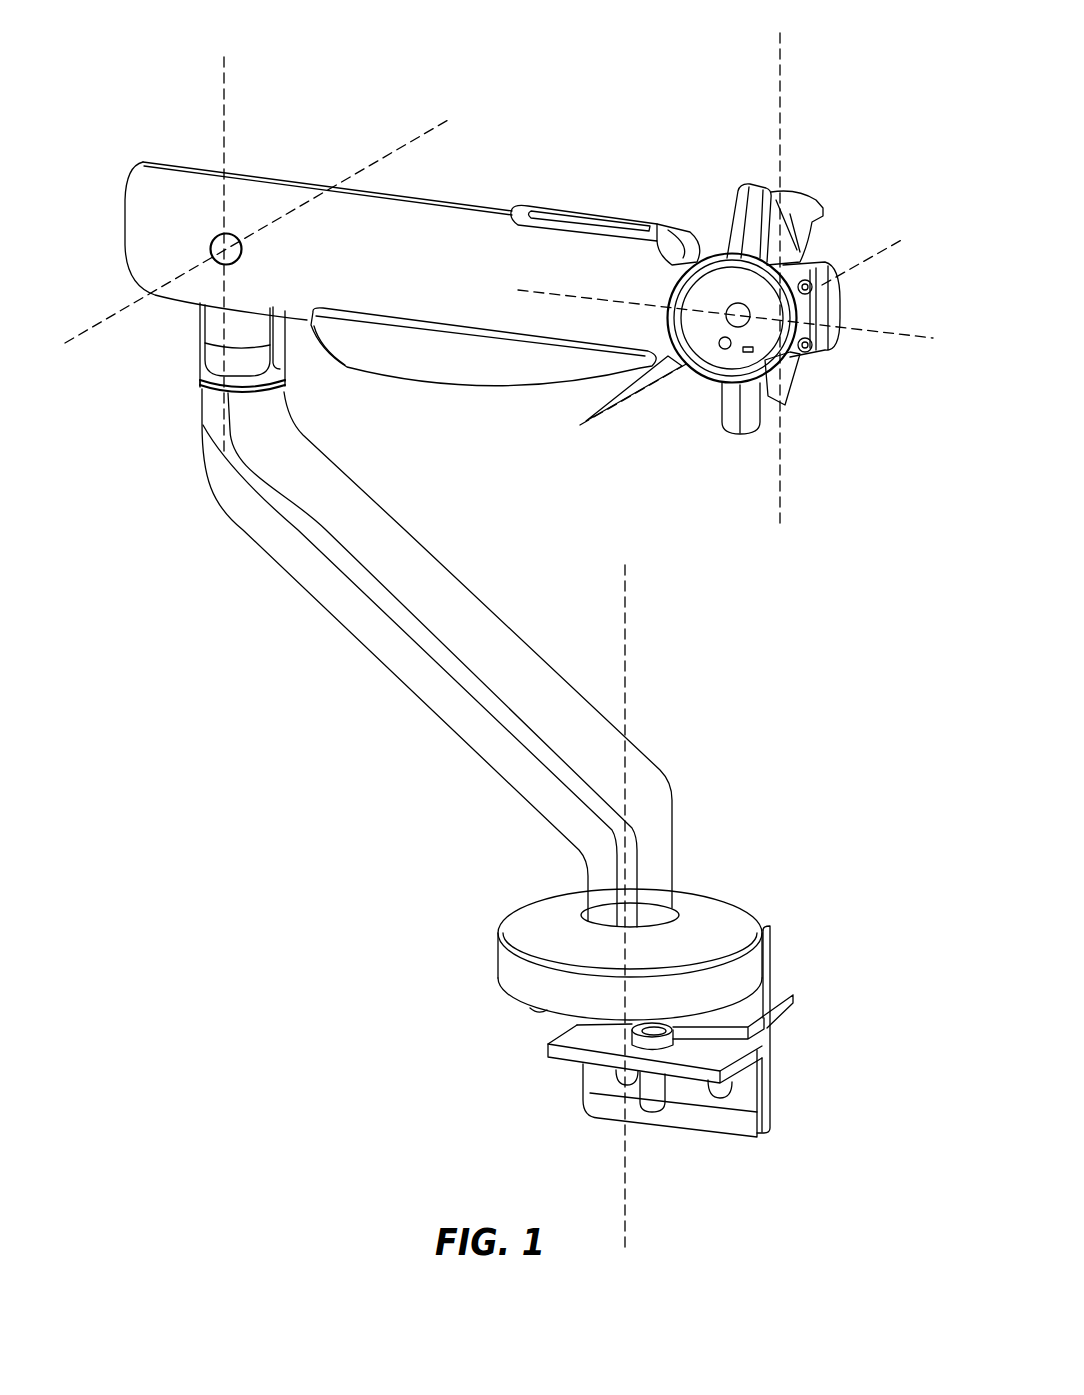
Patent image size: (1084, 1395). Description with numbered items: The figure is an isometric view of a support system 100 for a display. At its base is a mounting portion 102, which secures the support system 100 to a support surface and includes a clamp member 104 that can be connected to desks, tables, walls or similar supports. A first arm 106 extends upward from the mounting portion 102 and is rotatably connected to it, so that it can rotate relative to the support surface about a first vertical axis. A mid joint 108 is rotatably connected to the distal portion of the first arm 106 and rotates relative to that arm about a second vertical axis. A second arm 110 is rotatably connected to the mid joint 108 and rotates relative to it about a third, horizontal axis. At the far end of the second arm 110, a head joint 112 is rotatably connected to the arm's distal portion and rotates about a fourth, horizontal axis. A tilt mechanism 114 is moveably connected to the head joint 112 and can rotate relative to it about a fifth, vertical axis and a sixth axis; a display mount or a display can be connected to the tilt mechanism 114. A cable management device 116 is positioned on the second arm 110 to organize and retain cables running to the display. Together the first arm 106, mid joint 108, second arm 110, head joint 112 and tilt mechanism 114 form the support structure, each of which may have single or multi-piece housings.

The support system 100 is at (160, 74).
The mounting portion 102 is at (797, 958).
The clamp member 104 is at (765, 1034).
The first arm 106 is at (684, 783).
The mid joint 108 is at (192, 350).
The second arm 110 is at (305, 180).
The head joint 112 is at (859, 284).
The tilt mechanism 114 is at (836, 174).
The cable management device 116 is at (505, 392).